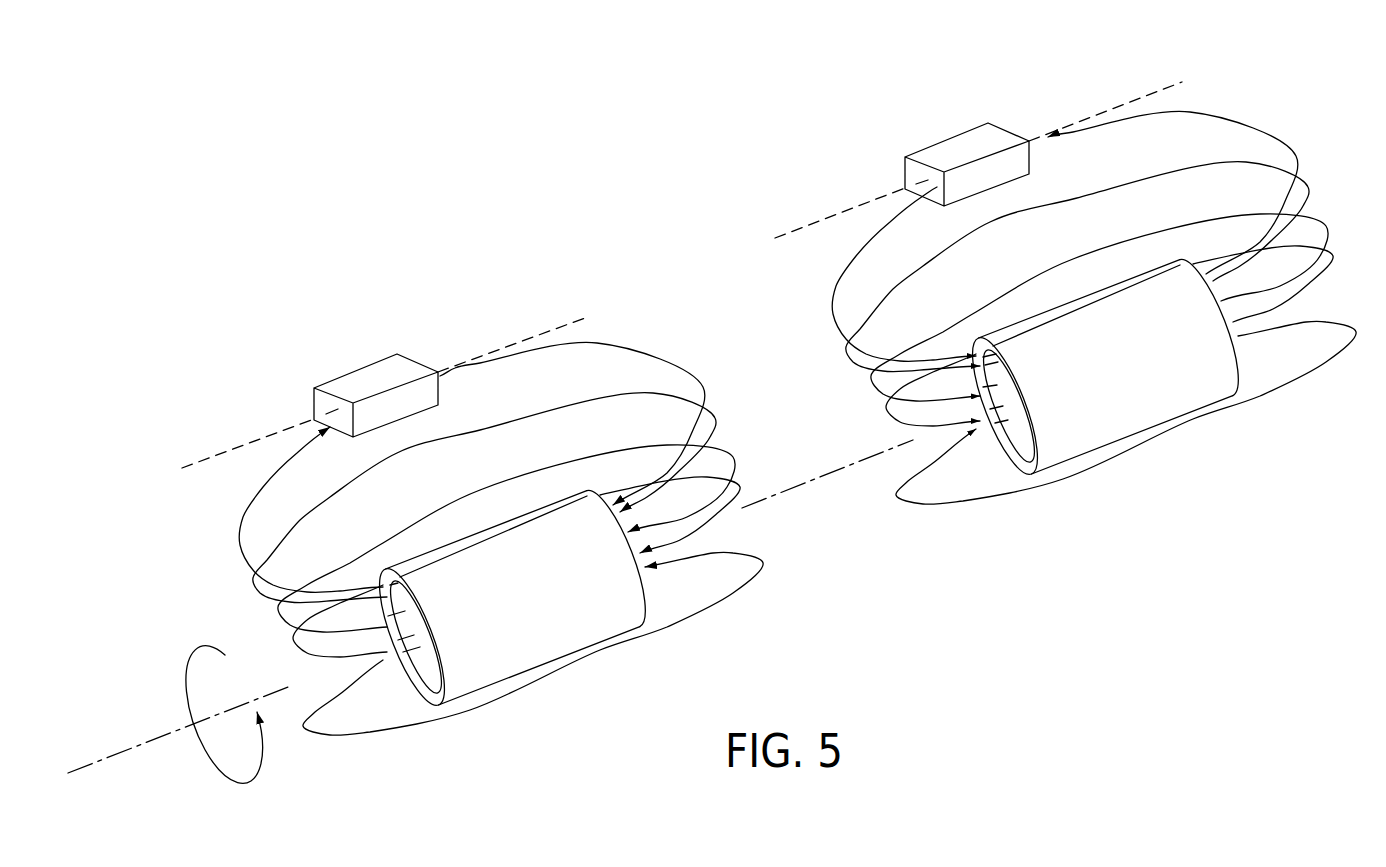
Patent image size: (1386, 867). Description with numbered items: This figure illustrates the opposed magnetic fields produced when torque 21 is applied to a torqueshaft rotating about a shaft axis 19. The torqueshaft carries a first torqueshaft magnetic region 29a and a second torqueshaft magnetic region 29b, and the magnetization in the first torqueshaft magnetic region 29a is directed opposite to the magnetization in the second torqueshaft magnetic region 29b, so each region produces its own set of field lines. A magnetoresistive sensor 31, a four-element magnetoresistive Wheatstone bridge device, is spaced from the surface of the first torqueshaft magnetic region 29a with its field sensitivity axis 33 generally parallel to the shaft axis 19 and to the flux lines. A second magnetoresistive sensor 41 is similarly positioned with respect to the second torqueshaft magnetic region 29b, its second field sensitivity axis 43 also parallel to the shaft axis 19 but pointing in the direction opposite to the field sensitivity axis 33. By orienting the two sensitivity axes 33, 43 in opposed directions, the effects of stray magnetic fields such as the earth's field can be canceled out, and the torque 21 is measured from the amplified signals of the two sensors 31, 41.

The shaft axis 19 is at (125, 748).
The torque 21 is at (192, 645).
The first torqueshaft magnetic region 29a is at (557, 660).
The second torqueshaft magnetic region 29b is at (1148, 428).
The magnetoresistive sensor 31 is at (373, 372).
The field sensitivity axis 33 is at (583, 317).
The second magnetoresistive sensor 41 is at (967, 138).
The second field sensitivity axis 43 is at (1163, 88).